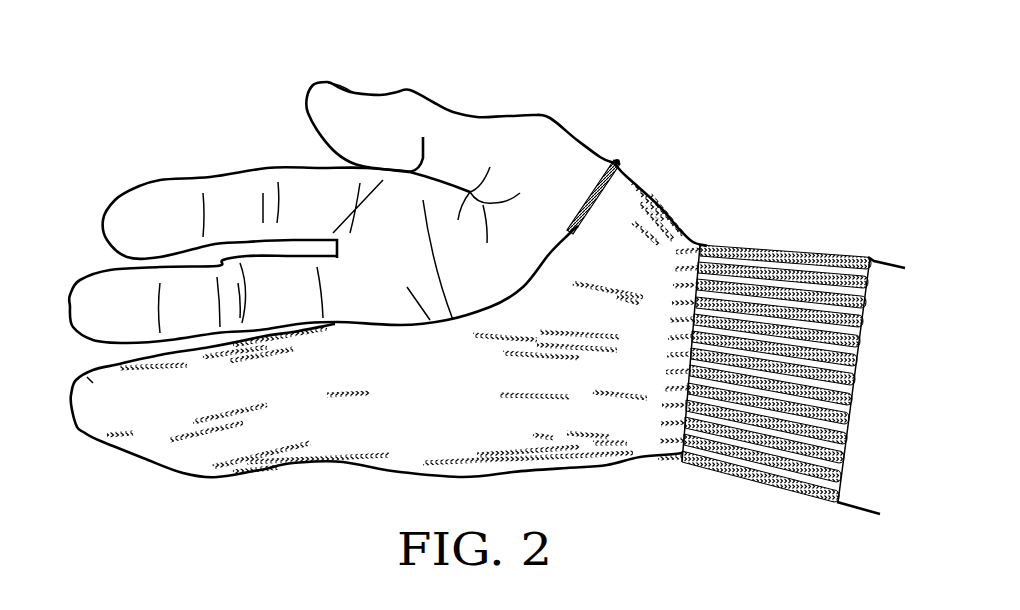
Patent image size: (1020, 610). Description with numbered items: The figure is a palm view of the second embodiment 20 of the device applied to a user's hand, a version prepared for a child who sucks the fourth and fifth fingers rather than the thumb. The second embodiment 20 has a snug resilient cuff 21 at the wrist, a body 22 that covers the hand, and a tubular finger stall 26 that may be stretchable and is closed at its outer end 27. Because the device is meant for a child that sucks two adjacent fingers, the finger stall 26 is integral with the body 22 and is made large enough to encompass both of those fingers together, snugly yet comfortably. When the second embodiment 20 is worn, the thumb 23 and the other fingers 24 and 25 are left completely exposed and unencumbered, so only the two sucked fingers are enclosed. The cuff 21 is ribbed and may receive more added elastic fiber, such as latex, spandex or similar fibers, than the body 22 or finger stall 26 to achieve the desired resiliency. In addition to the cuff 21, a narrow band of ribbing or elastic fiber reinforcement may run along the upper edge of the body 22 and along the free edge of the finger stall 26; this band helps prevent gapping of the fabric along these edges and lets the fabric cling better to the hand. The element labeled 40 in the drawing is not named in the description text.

The second embodiment 20 is at (690, 176).
The snug resilient cuff 21 is at (787, 277).
The body 22 is at (590, 367).
The thumb 23 is at (388, 125).
The finger 24 is at (160, 207).
The finger 25 is at (97, 310).
The tubular finger stall 26 is at (287, 423).
The outer end 27 is at (93, 440).
The hem 40 is at (593, 212).